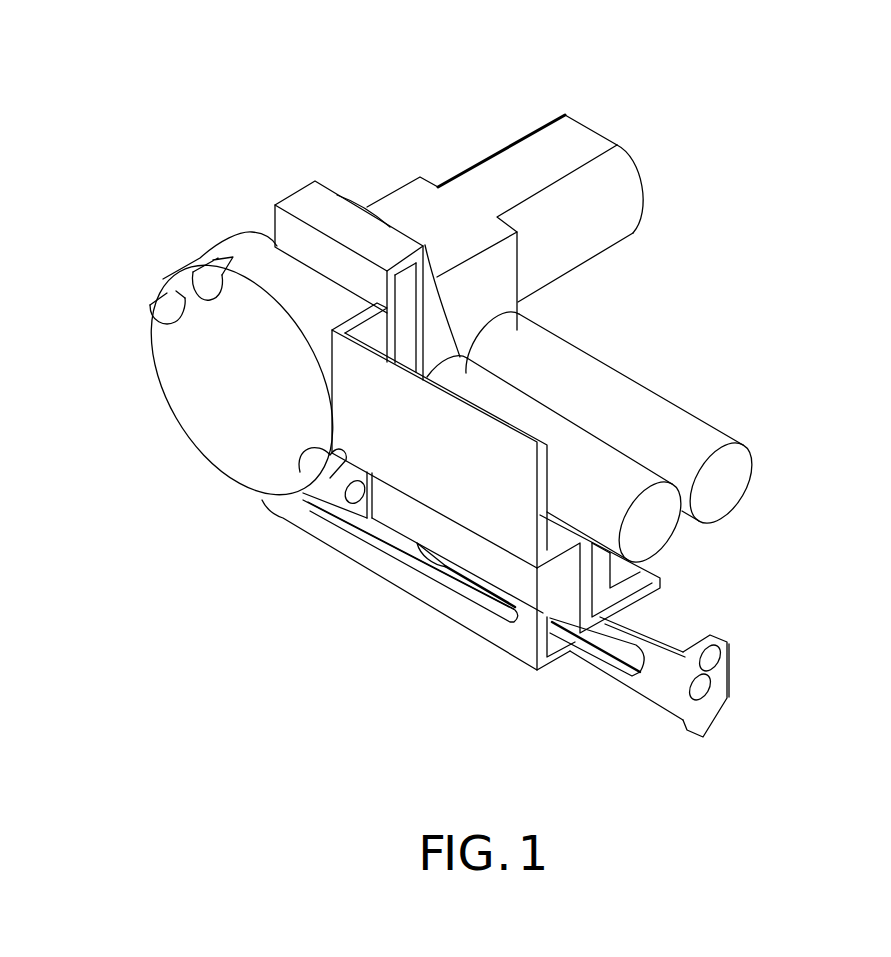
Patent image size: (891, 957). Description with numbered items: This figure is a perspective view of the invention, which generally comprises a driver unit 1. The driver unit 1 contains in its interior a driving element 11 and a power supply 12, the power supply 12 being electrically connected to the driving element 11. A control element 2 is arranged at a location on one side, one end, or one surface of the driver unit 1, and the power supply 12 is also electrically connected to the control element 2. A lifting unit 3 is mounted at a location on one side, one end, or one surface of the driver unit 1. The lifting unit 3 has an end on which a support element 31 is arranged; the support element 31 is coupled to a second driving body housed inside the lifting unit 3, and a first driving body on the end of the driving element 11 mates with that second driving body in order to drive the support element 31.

The driver unit 1 is at (752, 267).
The driving element 11 is at (522, 173).
The power supply 12 is at (635, 422).
The control element 2 is at (598, 573).
The lifting unit 3 is at (173, 418).
The support element 31 is at (468, 612).